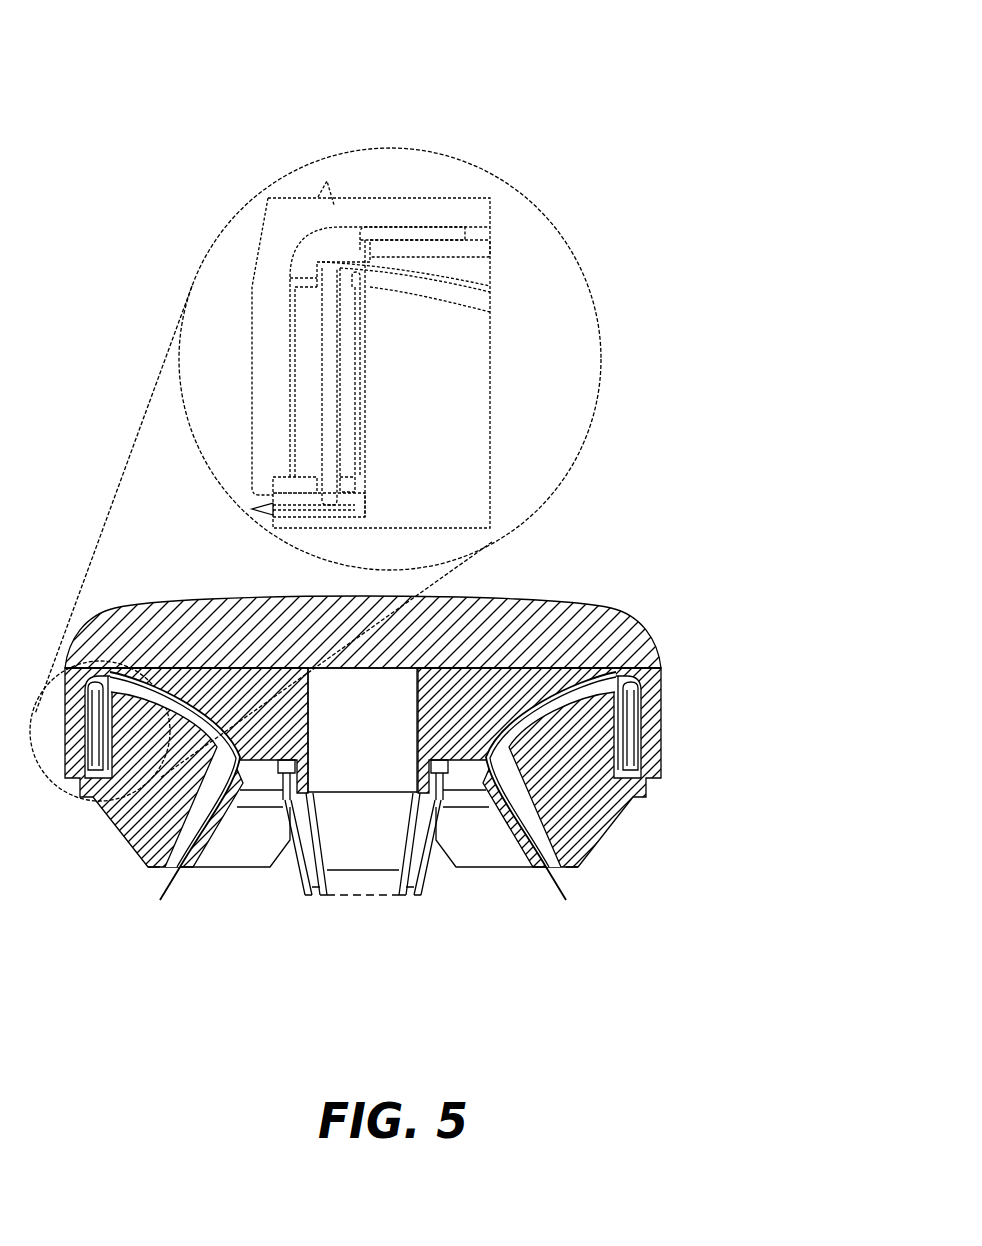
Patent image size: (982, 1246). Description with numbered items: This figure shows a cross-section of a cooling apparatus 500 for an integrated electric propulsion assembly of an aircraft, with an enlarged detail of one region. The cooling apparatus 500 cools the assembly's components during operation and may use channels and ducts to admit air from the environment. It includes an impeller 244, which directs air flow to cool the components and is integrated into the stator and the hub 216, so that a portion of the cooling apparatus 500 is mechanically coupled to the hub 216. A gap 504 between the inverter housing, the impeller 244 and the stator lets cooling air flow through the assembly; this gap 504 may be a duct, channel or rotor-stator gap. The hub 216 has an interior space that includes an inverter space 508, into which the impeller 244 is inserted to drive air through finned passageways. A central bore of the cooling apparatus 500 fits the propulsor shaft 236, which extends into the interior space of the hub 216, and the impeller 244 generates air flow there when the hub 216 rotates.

The cooling apparatus 500 is at (397, 496).
The gap 504 is at (290, 287).
The hub 216 is at (397, 685).
The impeller 244 is at (250, 690).
The propulsor shaft 236 is at (358, 880).
The inverter space 508 is at (600, 843).